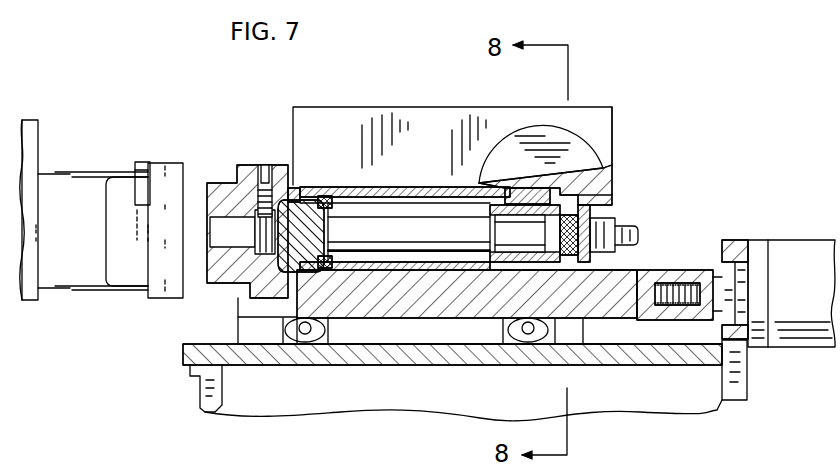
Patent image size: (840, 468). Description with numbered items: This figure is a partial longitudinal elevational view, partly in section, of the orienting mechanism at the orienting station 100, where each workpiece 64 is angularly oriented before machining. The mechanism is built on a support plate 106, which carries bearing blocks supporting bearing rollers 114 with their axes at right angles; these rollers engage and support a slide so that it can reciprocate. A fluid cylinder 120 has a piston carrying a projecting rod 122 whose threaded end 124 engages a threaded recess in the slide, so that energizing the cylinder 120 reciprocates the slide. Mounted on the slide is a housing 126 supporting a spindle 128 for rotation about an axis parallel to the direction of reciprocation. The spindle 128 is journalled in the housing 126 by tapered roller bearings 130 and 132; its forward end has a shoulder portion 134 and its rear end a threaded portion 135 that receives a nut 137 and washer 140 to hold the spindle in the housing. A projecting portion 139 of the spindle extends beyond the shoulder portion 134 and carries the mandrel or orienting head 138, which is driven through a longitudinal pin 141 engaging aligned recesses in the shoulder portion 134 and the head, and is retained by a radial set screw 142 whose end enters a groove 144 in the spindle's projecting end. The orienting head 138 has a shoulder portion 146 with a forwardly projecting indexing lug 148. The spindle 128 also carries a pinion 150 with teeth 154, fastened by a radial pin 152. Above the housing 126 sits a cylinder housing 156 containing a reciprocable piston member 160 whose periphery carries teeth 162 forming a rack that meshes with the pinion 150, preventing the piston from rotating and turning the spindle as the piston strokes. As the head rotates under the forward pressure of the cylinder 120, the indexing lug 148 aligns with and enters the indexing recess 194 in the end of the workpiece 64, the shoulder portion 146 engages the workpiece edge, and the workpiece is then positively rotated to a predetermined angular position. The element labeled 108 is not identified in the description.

The workpiece 64 is at (80, 175).
The orienting station 100 is at (622, 155).
The support plate 106 is at (506, 368).
The mounting bracket 108 is at (198, 406).
The bearing rollers 114 is at (328, 331).
The fluid cylinder 120 is at (808, 242).
The projecting rod 122 is at (735, 292).
The threaded end 124 is at (680, 312).
The housing 126 is at (408, 272).
The spindle 128 is at (450, 190).
The tapered roller bearing 130 is at (328, 219).
The tapered roller bearing 132 is at (612, 190).
The shoulder portion 134 is at (300, 256).
The threaded portion 135 is at (620, 226).
The nut 137 is at (630, 245).
The mandrel or orienting head 138 is at (108, 228).
The projecting portion 139 is at (210, 227).
The washer 140 is at (640, 268).
The pin 141 is at (293, 200).
The radial set screw 142 is at (262, 170).
The groove 144 is at (262, 232).
The shoulder portion 146 is at (178, 298).
The indexing lug 148 is at (147, 163).
The pinion 150 is at (520, 215).
The radial pin 152 is at (524, 233).
The teeth 154 is at (548, 281).
The cylinder housing 156 is at (605, 118).
The piston member 160 is at (605, 176).
The teeth 162 is at (535, 195).
The indexing recess 194 is at (135, 172).